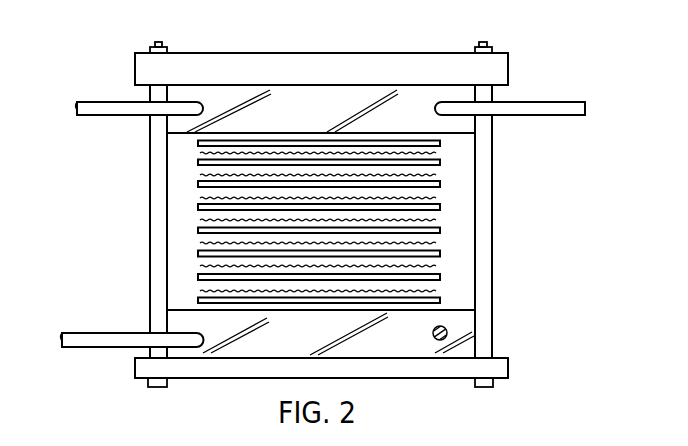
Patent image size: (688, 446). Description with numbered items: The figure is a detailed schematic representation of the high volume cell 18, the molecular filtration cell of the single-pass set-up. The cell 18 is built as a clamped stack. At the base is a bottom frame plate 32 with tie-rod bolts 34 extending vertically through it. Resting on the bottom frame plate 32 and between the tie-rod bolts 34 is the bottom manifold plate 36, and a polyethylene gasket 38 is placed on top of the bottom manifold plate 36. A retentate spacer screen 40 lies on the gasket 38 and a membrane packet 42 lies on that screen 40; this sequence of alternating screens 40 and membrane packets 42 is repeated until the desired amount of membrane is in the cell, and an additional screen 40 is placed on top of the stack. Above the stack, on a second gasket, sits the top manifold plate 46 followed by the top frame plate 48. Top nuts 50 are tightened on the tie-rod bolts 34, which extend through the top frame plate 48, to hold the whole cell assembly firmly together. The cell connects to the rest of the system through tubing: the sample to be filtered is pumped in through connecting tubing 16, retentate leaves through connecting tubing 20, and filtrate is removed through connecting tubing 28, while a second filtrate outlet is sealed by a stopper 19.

The connecting tubing 16 is at (560, 103).
The high volume cell 18 is at (379, 221).
The stopper 19 is at (441, 340).
The connecting tubing 20 is at (78, 348).
The connecting tubing 28 is at (110, 103).
The bottom frame plate 32 is at (508, 368).
The tie-rod bolts 34 is at (150, 149).
The bottom manifold plate 36 is at (197, 378).
The polyethylene gasket 38 is at (284, 140).
The retentate spacer screen 40 is at (332, 152).
The membrane packet 42 is at (388, 160).
The top manifold plate 46 is at (367, 92).
The top frame plate 48 is at (301, 60).
The top nuts 50 is at (167, 47).